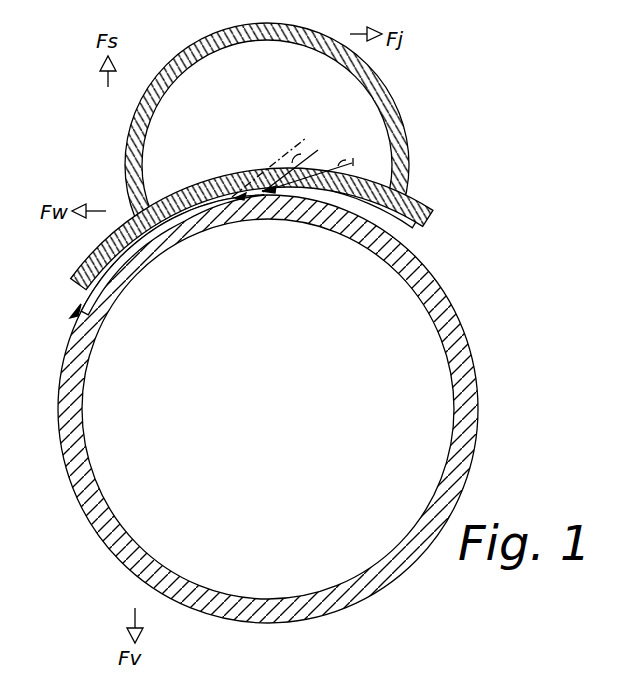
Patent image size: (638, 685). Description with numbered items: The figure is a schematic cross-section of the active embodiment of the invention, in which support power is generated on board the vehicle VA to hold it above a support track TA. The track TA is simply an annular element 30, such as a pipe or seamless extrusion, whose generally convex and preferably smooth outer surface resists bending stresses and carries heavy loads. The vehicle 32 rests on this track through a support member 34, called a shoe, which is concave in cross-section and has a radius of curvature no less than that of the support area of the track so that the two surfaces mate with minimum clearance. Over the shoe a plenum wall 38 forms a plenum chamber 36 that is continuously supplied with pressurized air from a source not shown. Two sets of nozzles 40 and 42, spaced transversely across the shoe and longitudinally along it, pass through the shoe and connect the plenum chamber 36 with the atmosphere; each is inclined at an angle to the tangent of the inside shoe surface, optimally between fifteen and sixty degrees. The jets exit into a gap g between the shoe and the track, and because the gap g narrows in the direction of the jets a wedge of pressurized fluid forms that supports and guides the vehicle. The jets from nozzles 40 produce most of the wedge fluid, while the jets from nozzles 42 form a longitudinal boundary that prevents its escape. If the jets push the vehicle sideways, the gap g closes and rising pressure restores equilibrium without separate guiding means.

The annular element 30 is at (476, 354).
The vehicle 32 is at (266, 230).
The support member 34 is at (418, 230).
The plenum chamber 36 is at (229, 133).
The plenum wall 38 is at (406, 131).
The nozzles 40 is at (276, 176).
The nozzles 42 is at (303, 159).
The gap g is at (160, 240).
The support track TA is at (290, 410).
The vehicle VA is at (293, 162).